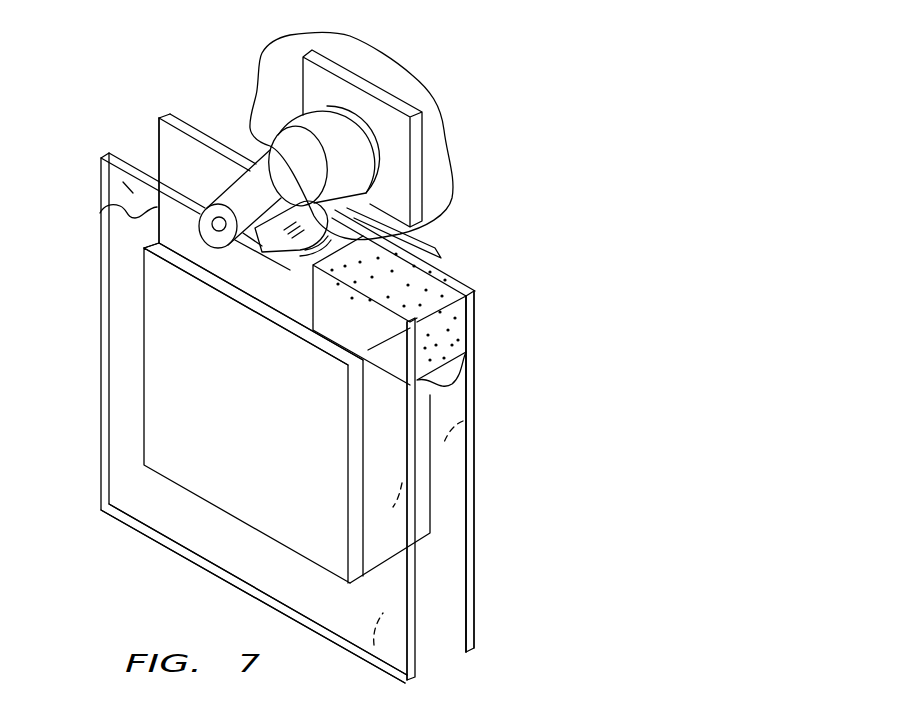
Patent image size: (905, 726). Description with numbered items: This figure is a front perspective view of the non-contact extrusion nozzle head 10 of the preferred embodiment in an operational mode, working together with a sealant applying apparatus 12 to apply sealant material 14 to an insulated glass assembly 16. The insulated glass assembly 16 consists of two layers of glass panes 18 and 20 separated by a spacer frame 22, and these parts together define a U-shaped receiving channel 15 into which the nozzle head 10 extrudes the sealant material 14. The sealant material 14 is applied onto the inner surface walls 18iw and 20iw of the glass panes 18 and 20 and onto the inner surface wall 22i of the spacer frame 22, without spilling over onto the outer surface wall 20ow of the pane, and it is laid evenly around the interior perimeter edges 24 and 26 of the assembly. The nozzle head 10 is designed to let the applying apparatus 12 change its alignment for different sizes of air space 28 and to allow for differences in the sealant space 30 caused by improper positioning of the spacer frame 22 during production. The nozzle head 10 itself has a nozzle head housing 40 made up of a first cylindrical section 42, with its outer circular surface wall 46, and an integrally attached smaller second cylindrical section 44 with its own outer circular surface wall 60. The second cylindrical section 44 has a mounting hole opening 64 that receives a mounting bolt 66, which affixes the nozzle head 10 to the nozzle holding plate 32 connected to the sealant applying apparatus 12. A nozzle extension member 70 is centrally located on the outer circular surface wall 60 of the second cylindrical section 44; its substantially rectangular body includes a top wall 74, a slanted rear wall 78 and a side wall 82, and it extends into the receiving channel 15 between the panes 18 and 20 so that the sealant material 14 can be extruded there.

The non-contact extrusion nozzle head 10 is at (398, 173).
The sealant applying apparatus 12 is at (445, 108).
The sealant material 14 is at (424, 280).
The U-shaped receiving channel 15 is at (441, 492).
The insulated glass assembly 16 is at (170, 510).
The glass pane 18 is at (418, 652).
The inner surface wall of glass pane 18iw is at (387, 587).
The glass pane 20 is at (470, 550).
The outer surface wall of glass pane 20ow is at (475, 418).
The inner surface wall of glass pane 20iw is at (187, 153).
The spacer frame 22 is at (202, 287).
The inner surface wall of spacer frame 22i is at (136, 180).
The interior perimeter edge 24 is at (115, 182).
The interior perimeter edge 26 is at (158, 135).
The air space 28 is at (101, 213).
The sealant space 30 is at (466, 380).
The nozzle holding plate 32 is at (360, 92).
The nozzle head housing 40 is at (243, 262).
The first cylindrical section 42 is at (337, 127).
The second cylindrical section 44 is at (260, 134).
The outer circular surface wall 46 is at (360, 152).
The outer circular surface wall 60 is at (282, 168).
The mounting hole opening 64 is at (217, 221).
The mounting bolt/screw 66 is at (205, 243).
The nozzle extension member 70 is at (316, 165).
The top wall 74 is at (356, 206).
The slanted rear wall 78 is at (256, 238).
The side wall 82 is at (294, 250).